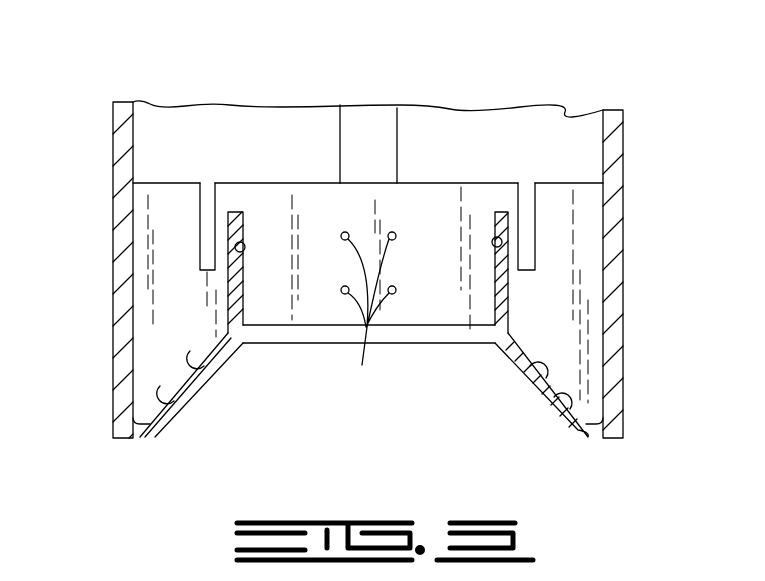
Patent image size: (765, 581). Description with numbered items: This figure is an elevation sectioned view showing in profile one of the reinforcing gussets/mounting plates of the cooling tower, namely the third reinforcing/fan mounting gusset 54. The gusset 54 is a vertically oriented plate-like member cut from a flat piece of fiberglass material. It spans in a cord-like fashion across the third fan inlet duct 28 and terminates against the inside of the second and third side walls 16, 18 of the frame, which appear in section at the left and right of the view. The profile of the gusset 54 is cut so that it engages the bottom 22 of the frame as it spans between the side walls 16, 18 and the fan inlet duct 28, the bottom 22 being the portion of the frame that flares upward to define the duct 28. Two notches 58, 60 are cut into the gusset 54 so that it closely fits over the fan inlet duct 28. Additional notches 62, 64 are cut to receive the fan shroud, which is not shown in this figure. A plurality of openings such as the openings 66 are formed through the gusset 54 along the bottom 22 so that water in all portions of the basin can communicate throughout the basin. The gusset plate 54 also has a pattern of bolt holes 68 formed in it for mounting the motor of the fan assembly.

The second side 16 is at (493, 123).
The third side 18 is at (121, 127).
The bottom 22 is at (150, 408).
The third fan inlet duct 28 is at (502, 310).
The third reinforcing/fan mounting gusset 54 is at (348, 200).
The notch 58 is at (245, 247).
The notch 60 is at (496, 238).
The additional notch 62 is at (210, 205).
The additional notch 64 is at (532, 200).
The openings 66 is at (198, 377).
The bolt holes 68 is at (368, 312).